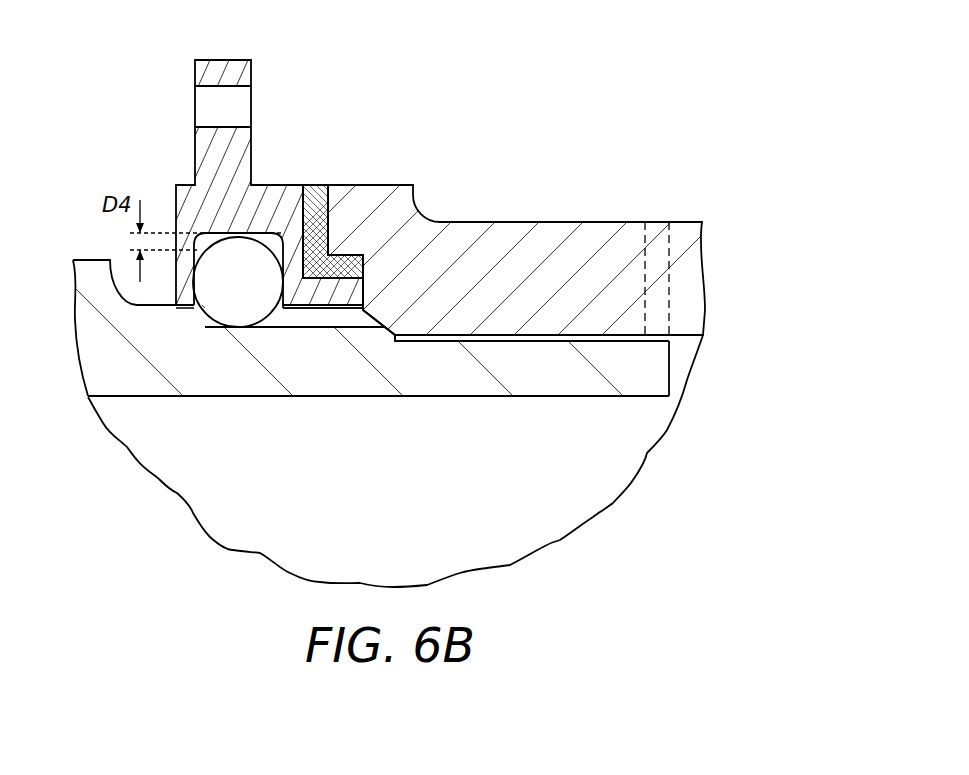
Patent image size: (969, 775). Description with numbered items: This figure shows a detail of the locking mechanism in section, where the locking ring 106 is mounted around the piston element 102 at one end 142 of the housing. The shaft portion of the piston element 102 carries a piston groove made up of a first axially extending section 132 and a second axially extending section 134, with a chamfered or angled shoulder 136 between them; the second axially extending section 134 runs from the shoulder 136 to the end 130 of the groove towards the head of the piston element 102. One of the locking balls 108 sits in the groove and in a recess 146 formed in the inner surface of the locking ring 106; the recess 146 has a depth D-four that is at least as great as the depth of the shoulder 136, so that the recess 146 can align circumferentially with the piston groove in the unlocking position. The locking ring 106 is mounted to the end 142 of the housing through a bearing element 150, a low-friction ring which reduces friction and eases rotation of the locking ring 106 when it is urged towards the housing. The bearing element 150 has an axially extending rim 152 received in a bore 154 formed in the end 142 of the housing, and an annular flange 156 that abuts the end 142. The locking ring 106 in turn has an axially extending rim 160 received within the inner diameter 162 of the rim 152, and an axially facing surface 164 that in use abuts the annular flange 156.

The piston element 102 is at (582, 383).
The locking ring 106 is at (268, 193).
The locking balls 108 is at (240, 316).
The end of piston groove 130 is at (203, 316).
The first axially extending section 132 is at (517, 341).
The second axially extending section 134 is at (333, 318).
The shoulder 136 is at (388, 337).
The end of housing 142 is at (348, 252).
The recess 146 is at (215, 233).
The bearing element 150 is at (329, 213).
The axially extending rim 152 is at (370, 254).
The bore 154 is at (360, 267).
The annular flange 156 is at (322, 204).
The axially extending rim 160 is at (315, 298).
The inner diameter 162 is at (353, 283).
The axially facing surface 164 is at (315, 192).